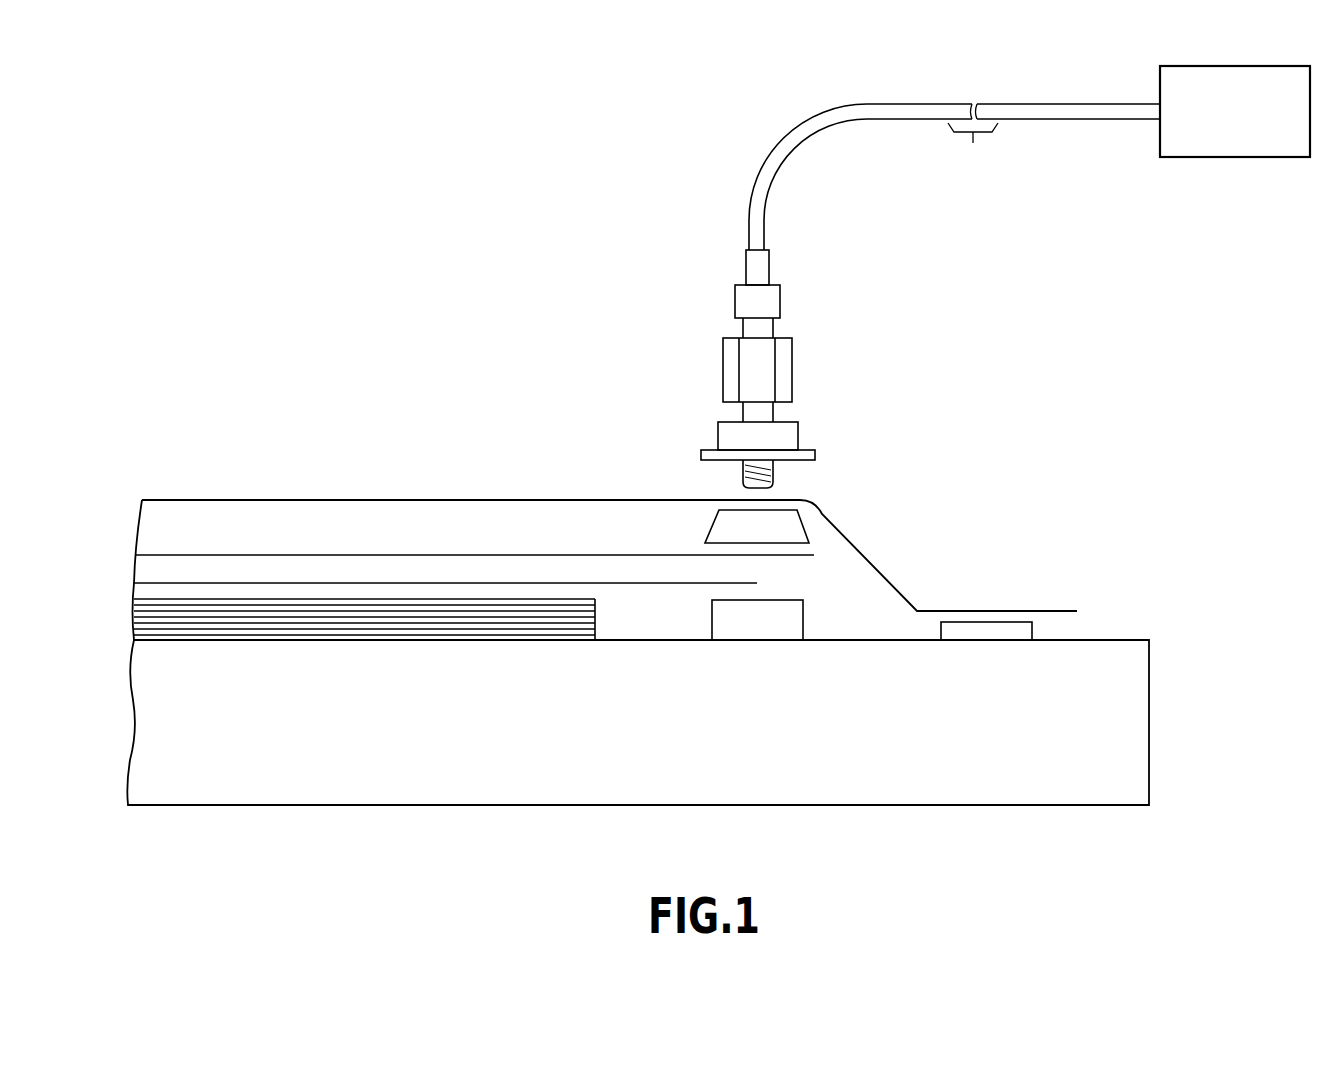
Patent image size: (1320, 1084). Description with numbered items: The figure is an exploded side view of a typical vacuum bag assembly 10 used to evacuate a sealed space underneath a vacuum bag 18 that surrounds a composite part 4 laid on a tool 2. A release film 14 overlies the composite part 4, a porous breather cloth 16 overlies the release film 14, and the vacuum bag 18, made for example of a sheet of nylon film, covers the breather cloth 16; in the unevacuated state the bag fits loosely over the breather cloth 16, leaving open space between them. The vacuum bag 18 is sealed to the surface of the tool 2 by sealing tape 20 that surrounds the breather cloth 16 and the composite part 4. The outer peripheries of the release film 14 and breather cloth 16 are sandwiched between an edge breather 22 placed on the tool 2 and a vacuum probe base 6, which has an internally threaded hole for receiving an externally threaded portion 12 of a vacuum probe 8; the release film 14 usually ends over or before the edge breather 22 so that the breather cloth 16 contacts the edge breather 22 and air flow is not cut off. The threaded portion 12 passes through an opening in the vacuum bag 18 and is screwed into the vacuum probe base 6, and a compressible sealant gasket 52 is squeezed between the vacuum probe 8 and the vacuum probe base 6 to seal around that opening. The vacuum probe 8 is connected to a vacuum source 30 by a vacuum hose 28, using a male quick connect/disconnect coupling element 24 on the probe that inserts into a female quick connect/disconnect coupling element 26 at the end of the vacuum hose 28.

The tool 2 is at (1150, 665).
The composite part 4 is at (190, 597).
The vacuum probe base 6 is at (808, 532).
The vacuum probe 8 is at (800, 360).
The vacuum bag assembly 10 is at (403, 375).
The externally threaded portion 12 is at (745, 470).
The release film 14 is at (280, 583).
The breather cloth 16 is at (378, 555).
The vacuum bag 18 is at (496, 500).
The sealing tape 20 is at (1012, 622).
The edge breather 22 is at (805, 620).
The male quick connect/disconnect coupling element 24 is at (738, 330).
The female quick connect/disconnect coupling element 26 is at (770, 278).
The vacuum hose 28 is at (787, 165).
The vacuum source 30 is at (1207, 157).
The sealant gasket 52 is at (815, 455).